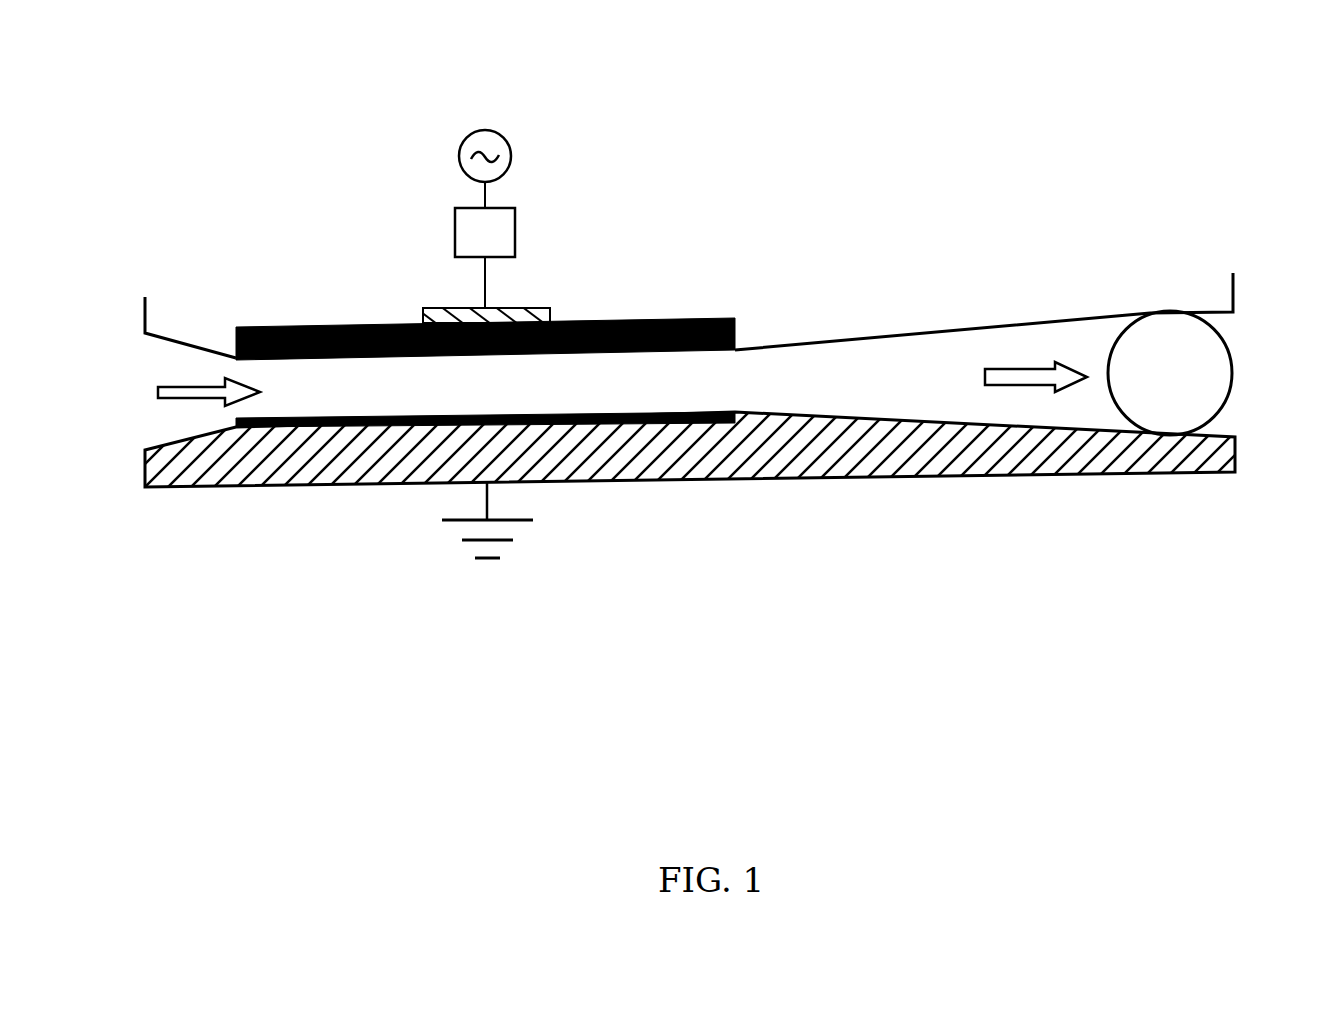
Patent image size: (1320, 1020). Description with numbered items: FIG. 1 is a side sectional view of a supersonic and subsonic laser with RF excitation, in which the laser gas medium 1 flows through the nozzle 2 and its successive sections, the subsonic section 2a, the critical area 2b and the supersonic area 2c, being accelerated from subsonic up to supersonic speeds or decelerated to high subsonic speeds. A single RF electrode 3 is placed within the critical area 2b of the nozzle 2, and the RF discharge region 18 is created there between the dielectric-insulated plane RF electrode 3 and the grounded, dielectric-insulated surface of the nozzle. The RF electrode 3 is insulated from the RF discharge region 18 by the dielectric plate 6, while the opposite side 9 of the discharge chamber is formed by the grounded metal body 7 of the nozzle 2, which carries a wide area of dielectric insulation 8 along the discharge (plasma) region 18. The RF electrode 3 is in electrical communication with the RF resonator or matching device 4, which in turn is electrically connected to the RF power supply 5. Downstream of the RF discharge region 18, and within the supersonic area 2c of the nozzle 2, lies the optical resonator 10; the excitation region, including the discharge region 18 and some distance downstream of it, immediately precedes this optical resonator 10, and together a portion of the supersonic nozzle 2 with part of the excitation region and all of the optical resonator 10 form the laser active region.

The laser gas medium 1 is at (155, 391).
The nozzle 2 is at (560, 378).
The subsonic section 2a is at (183, 437).
The critical area 2b is at (582, 400).
The supersonic area 2c is at (890, 418).
The RF electrode 3 is at (433, 310).
The RF resonator or matching device 4 is at (462, 232).
The RF power supply 5 is at (482, 135).
The dielectric plate 6 is at (348, 325).
The grounded metal body 7 is at (350, 455).
The dielectric insulation 8 is at (330, 420).
The opposite side 9 is at (493, 558).
The optical resonator 10 is at (1180, 377).
The RF discharge region 18 is at (483, 385).